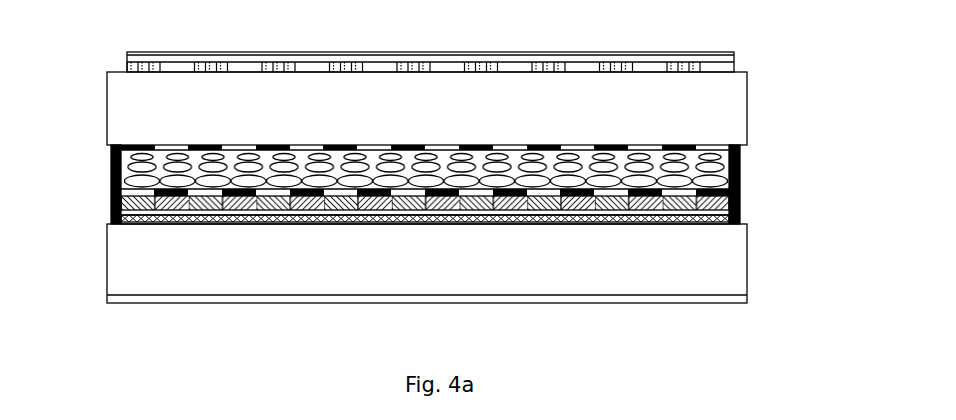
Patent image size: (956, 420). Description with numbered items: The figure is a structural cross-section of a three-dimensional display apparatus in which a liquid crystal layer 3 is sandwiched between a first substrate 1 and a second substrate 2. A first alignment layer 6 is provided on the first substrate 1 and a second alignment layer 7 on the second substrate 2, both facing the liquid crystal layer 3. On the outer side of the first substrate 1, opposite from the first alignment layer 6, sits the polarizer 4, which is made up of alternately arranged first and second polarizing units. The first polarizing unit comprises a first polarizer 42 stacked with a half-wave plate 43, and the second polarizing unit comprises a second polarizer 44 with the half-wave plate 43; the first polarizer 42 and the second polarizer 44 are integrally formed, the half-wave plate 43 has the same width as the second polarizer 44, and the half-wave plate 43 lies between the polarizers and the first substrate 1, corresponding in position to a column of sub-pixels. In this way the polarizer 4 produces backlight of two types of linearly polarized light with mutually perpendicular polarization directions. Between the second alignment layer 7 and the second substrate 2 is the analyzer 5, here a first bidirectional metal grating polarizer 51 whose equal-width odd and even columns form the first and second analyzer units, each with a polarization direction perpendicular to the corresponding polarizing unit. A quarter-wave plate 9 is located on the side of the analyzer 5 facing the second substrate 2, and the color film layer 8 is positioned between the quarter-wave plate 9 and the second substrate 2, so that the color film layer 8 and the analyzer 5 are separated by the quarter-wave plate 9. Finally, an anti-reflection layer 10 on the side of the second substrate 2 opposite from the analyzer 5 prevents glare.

The first substrate 1 is at (724, 109).
The second substrate 2 is at (424, 263).
The liquid crystal layer 3 is at (740, 153).
The polarizer 4 is at (482, 44).
The first polarizer 42 is at (463, 39).
The second polarizer 44 is at (697, 57).
The half-wave plate 43 is at (688, 68).
The analyzer 5 is at (421, 160).
The first bidirectional metal grating polarizer 51 is at (112, 202).
The first alignment layer 6 is at (178, 145).
The second alignment layer 7 is at (383, 181).
The color film layer 8 is at (735, 220).
The quarter-wave plate 9 is at (738, 197).
The anti-reflection layer 10 is at (162, 300).